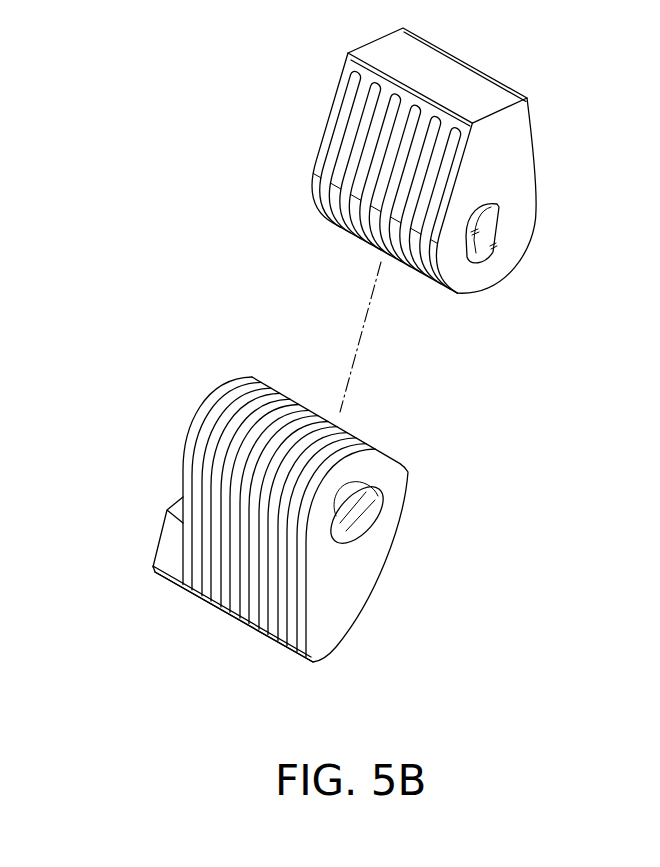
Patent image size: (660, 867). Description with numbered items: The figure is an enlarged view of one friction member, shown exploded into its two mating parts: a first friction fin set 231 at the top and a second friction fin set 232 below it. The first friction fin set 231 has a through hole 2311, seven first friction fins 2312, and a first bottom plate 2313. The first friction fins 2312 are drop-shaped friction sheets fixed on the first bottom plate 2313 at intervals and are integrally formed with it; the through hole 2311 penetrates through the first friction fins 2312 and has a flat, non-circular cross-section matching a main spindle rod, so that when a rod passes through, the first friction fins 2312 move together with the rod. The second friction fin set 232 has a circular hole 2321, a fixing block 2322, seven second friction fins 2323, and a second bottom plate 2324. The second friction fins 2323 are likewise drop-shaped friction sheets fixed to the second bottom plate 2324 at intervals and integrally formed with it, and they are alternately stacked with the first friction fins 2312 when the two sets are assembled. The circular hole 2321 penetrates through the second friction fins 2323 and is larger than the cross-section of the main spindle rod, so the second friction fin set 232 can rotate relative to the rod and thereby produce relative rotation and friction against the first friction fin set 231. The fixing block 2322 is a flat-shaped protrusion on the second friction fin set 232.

The first friction fin set 231 is at (532, 93).
The through hole 2311 is at (498, 226).
The first friction fins 2312 is at (454, 331).
The first bottom plate 2313 is at (470, 77).
The second friction fin set 232 is at (155, 580).
The circular hole 2321 is at (371, 522).
The fixing block 2322 is at (164, 554).
The second friction fins 2323 is at (238, 418).
The second bottom plate 2324 is at (300, 655).